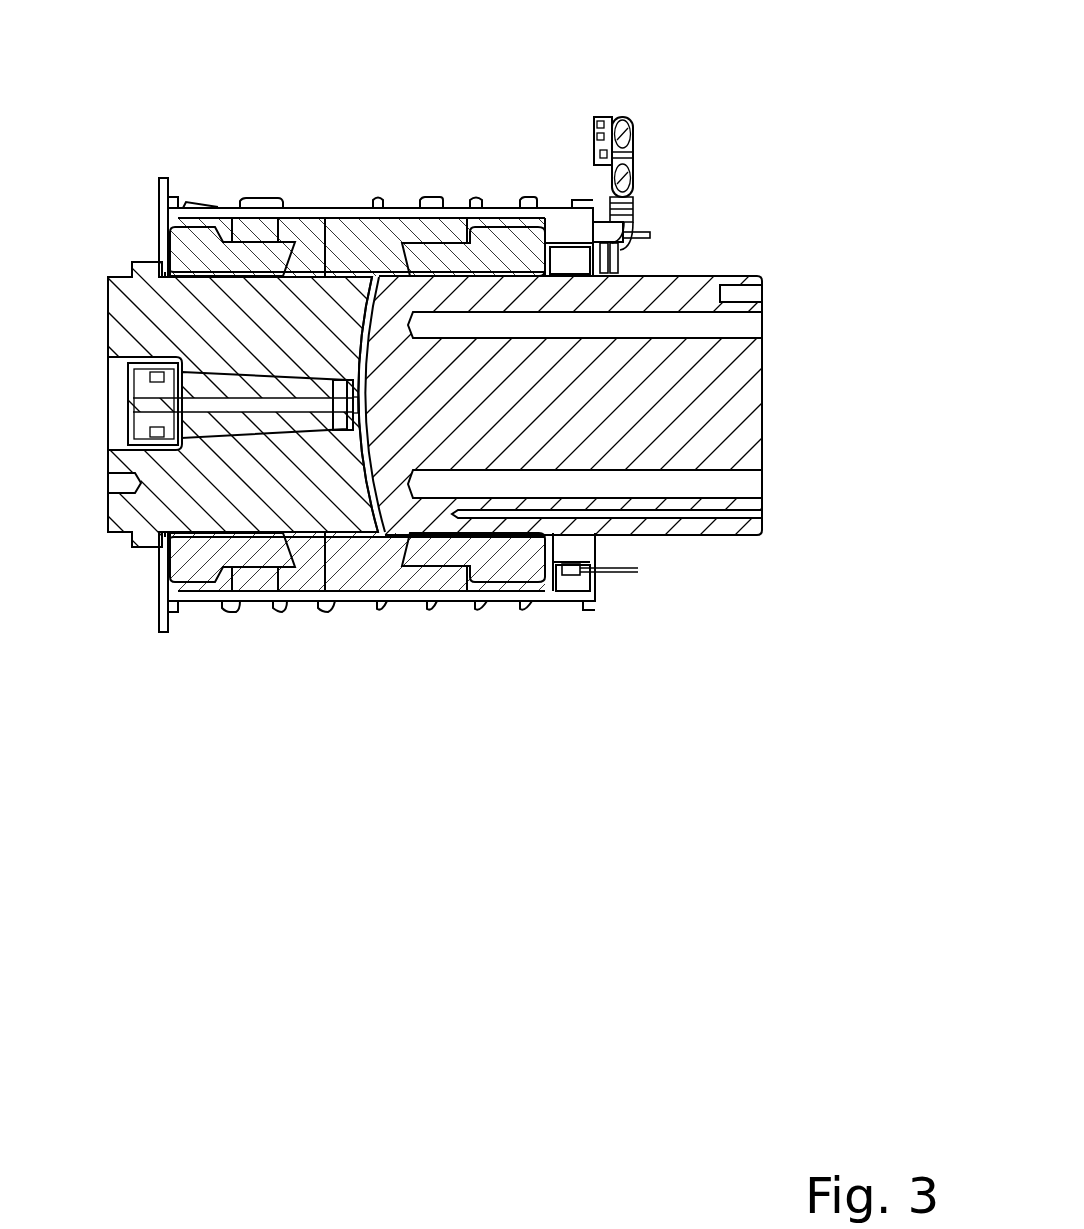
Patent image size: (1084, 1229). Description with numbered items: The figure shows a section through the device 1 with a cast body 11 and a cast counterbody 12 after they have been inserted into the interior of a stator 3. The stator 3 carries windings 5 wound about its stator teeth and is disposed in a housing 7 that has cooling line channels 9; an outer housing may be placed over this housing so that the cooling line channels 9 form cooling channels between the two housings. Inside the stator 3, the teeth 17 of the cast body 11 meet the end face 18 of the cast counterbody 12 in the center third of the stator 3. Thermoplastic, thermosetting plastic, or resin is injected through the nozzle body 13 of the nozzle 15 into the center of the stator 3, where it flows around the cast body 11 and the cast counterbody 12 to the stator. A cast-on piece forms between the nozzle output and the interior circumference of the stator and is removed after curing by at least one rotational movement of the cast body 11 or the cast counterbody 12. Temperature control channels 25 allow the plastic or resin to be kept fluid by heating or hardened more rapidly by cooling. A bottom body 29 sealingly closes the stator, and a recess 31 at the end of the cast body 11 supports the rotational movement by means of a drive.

The device 1 is at (568, 66).
The stator 3 is at (245, 230).
The windings 5 is at (193, 242).
The housing 7 is at (295, 218).
The cooling line channels 9 is at (478, 202).
The cast body 11 is at (140, 585).
The cast counterbody 12 is at (758, 258).
The nozzle body 13 is at (239, 339).
The nozzle 15 is at (358, 404).
The teeth 17 is at (384, 330).
The end face 18 is at (372, 276).
The temperature control channels 25 is at (758, 323).
The bottom body 29 is at (140, 243).
The recess 31 is at (120, 540).